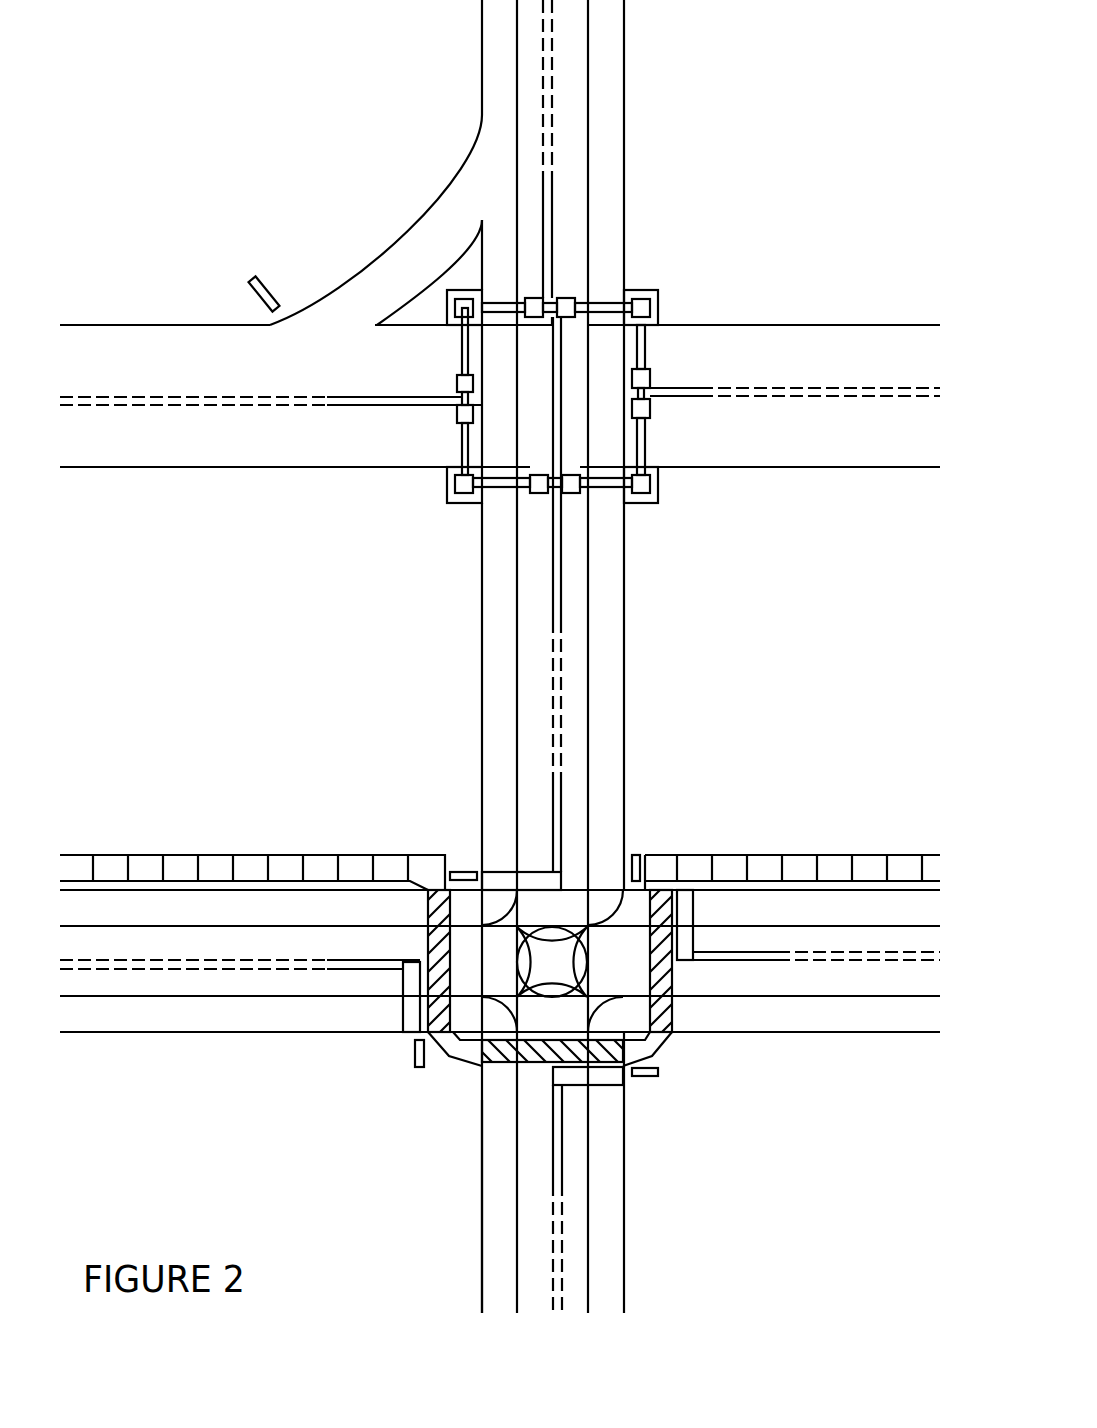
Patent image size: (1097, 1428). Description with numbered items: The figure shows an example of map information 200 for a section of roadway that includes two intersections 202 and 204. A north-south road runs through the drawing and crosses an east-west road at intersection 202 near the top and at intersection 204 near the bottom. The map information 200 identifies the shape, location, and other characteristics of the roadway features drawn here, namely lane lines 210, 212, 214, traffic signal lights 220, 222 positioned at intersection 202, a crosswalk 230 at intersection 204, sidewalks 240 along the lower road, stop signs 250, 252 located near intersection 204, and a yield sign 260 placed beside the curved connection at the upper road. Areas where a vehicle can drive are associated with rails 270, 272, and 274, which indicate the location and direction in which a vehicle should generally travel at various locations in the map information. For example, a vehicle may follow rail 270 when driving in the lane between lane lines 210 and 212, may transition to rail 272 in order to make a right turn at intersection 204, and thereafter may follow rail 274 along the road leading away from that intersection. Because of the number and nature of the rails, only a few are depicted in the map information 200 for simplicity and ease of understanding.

The map information 200 is at (183, 1237).
The intersection 202 is at (500, 397).
The intersection 204 is at (552, 962).
The lane line 210 is at (143, 969).
The lane line 212 is at (212, 1031).
The lane line 214 is at (553, 80).
The traffic signal light 220 is at (457, 412).
The traffic signal light 222 is at (457, 380).
The crosswalk 230 is at (482, 1047).
The sidewalks 240 is at (722, 855).
The stop sign 250 is at (465, 872).
The stop sign 252 is at (658, 1072).
The yield sign 260 is at (248, 286).
The rail 270 is at (217, 996).
The rail 272 is at (510, 1005).
The rail 274 is at (515, 1262).